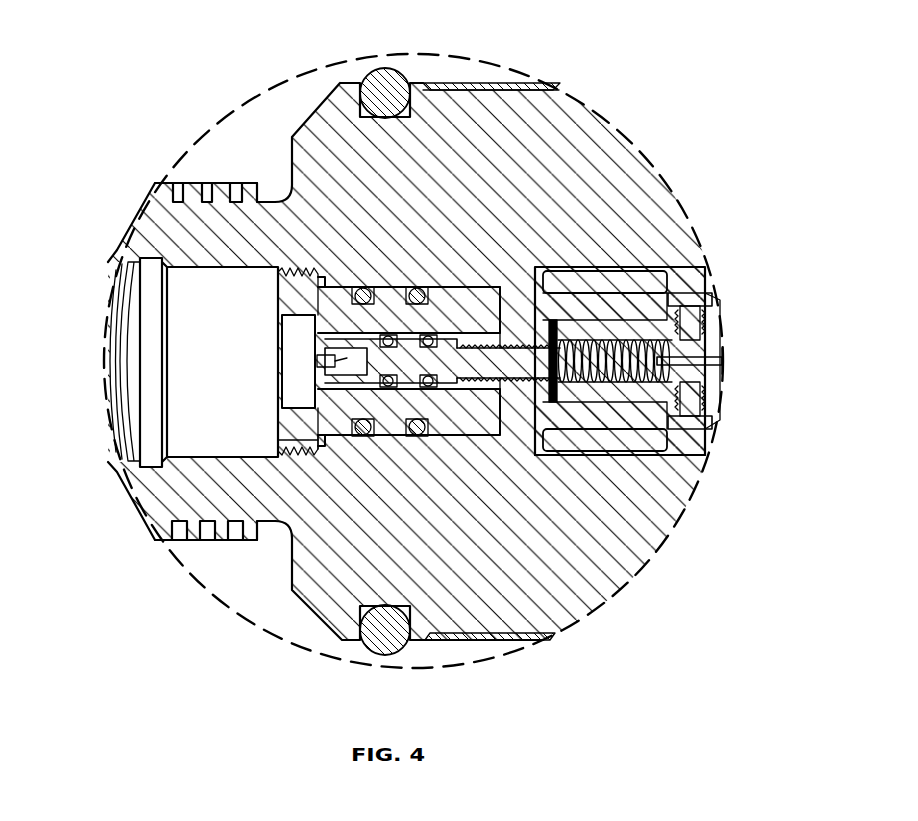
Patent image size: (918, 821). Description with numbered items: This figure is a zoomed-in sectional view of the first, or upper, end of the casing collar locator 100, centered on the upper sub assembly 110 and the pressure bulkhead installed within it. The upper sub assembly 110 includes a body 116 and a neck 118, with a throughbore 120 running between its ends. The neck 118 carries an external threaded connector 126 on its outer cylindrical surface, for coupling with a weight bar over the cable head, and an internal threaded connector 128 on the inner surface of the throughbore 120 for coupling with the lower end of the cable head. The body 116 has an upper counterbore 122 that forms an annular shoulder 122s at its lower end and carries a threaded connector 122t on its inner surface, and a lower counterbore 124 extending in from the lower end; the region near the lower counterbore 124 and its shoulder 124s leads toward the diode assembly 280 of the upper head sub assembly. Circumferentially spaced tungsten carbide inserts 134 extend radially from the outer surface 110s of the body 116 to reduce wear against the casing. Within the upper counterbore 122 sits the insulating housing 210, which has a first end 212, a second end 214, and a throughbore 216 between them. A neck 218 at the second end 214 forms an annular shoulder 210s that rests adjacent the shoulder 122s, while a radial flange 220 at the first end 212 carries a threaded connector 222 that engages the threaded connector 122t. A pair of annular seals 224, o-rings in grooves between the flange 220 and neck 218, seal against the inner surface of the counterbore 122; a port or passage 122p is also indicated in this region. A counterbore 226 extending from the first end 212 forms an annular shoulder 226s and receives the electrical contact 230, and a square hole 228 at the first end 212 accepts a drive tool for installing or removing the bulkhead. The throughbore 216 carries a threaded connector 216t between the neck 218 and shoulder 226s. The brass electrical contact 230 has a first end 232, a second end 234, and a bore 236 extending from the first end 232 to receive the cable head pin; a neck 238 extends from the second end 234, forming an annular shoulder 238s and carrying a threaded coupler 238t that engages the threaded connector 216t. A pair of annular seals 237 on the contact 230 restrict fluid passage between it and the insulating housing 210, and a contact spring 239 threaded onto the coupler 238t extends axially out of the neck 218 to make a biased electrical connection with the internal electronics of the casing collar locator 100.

The casing collar locator (CCL) 100 is at (118, 38).
The upper sub assembly 110 is at (318, 118).
The outer surface of body 110s is at (480, 83).
The body 116 is at (596, 108).
The neck 118 is at (165, 512).
The throughbore 120 is at (700, 270).
The upper counterbore 122 is at (330, 440).
The bore port 122p is at (395, 440).
The annular shoulder of upper counterbore 122s is at (468, 440).
The threaded connector of upper counterbore 122t is at (320, 452).
The lower counterbore 124 is at (707, 455).
The housing bottom surface plate 124s is at (525, 447).
The external threaded connector 126 is at (192, 182).
The internal threaded connector 128 is at (118, 355).
The inserts 134 is at (384, 92).
The insulating housing 210 is at (320, 282).
The annular shoulder of insulating housing 210s is at (488, 470).
The first end of insulating housing 212 is at (280, 447).
The second end of insulating housing 214 is at (553, 298).
The throughbore of insulating housing 216 is at (286, 340).
The threaded connector of throughbore 216t is at (487, 298).
The neck of insulating housing 218 is at (518, 292).
The radial flange 220 is at (252, 198).
The threaded connector of flange 222 is at (272, 524).
The annular seals 224 is at (355, 290).
The counterbore of insulating housing 226 is at (412, 290).
The annular shoulder of counterbore 226s is at (432, 292).
The square hole 228 is at (286, 370).
The electrical contact 230 is at (435, 390).
The first end of electrical contact 232 is at (280, 318).
The second end of electrical contact 234 is at (560, 402).
The bore of electrical contact 236 is at (316, 366).
The annular seals of electrical contact 237 is at (388, 390).
The neck of electrical contact 238 is at (572, 430).
The annular shoulder of contact neck 238s is at (466, 380).
The threaded coupler 238t is at (696, 306).
The contact spring 239 is at (640, 402).
The diode assembly 280 is at (707, 433).